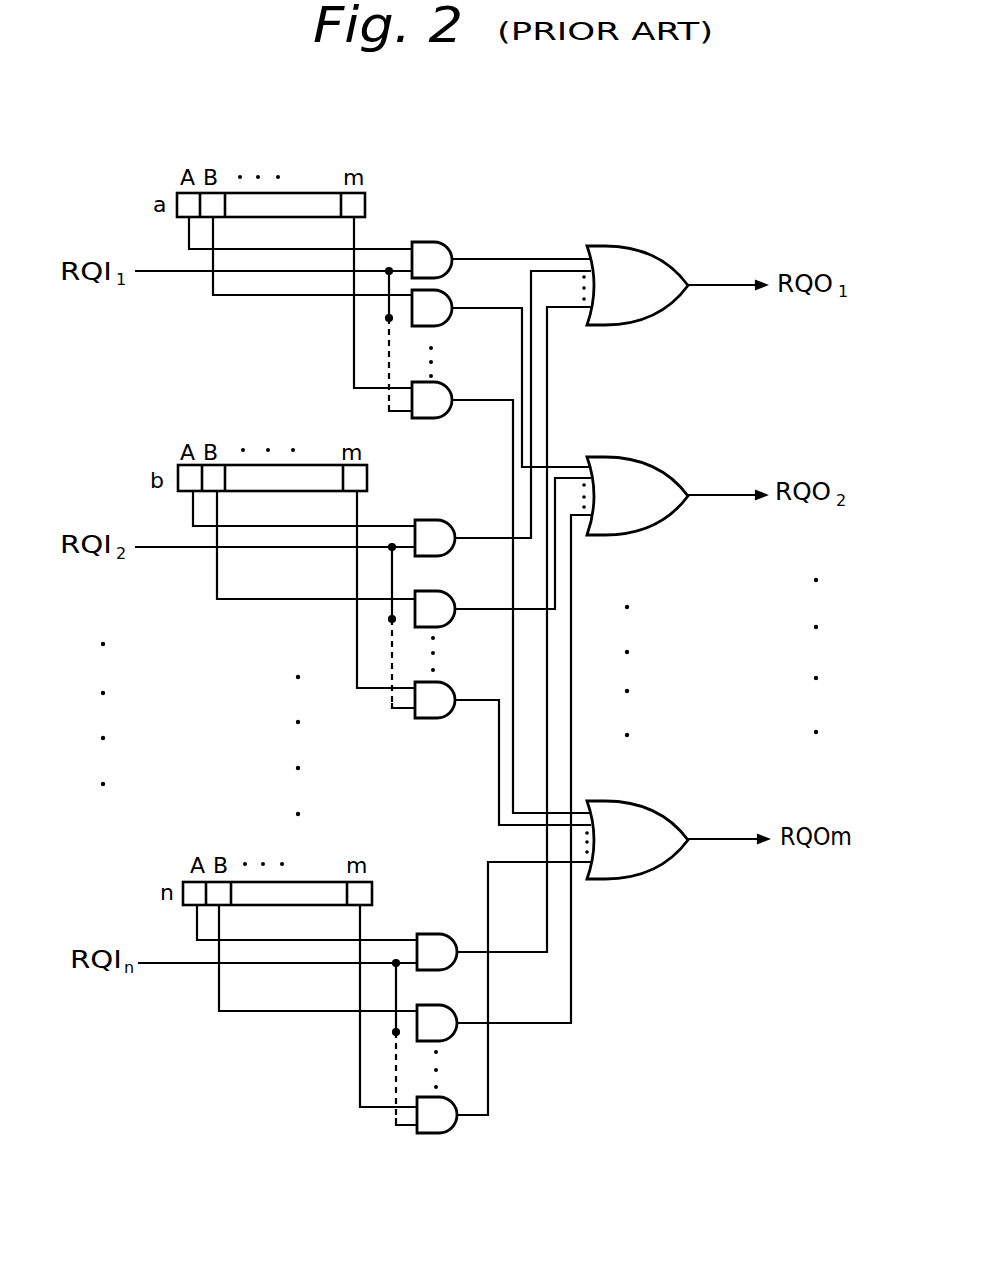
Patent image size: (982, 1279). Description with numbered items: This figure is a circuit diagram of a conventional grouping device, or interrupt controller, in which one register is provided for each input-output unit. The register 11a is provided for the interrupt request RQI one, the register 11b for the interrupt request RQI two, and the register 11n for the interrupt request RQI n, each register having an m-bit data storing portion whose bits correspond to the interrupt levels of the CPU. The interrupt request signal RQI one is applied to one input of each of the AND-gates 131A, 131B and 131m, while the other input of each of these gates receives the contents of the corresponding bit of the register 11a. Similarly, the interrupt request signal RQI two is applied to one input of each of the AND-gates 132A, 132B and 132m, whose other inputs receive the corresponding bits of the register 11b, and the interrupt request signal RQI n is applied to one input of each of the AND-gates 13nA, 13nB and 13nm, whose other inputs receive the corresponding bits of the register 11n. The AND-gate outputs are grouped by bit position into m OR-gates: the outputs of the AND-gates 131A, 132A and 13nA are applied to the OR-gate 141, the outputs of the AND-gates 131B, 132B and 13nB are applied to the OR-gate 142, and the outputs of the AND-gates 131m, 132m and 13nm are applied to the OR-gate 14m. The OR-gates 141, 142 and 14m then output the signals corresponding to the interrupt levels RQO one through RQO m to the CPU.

The register 11a is at (303, 192).
The register 11b is at (312, 465).
The register 11n is at (320, 882).
The AND-gate 131A is at (428, 243).
The AND-gate 131B is at (452, 299).
The AND-gate 131m is at (452, 387).
The AND-gate 132A is at (427, 521).
The AND-gate 132B is at (429, 593).
The AND-gate 132m is at (470, 682).
The AND-gate 13nA is at (432, 934).
The AND-gate 13nB is at (458, 1006).
The AND-gate 13nm is at (455, 1130).
The OR-gate 141 is at (658, 315).
The OR-gate 142 is at (658, 528).
The OR-gate 14m is at (658, 868).